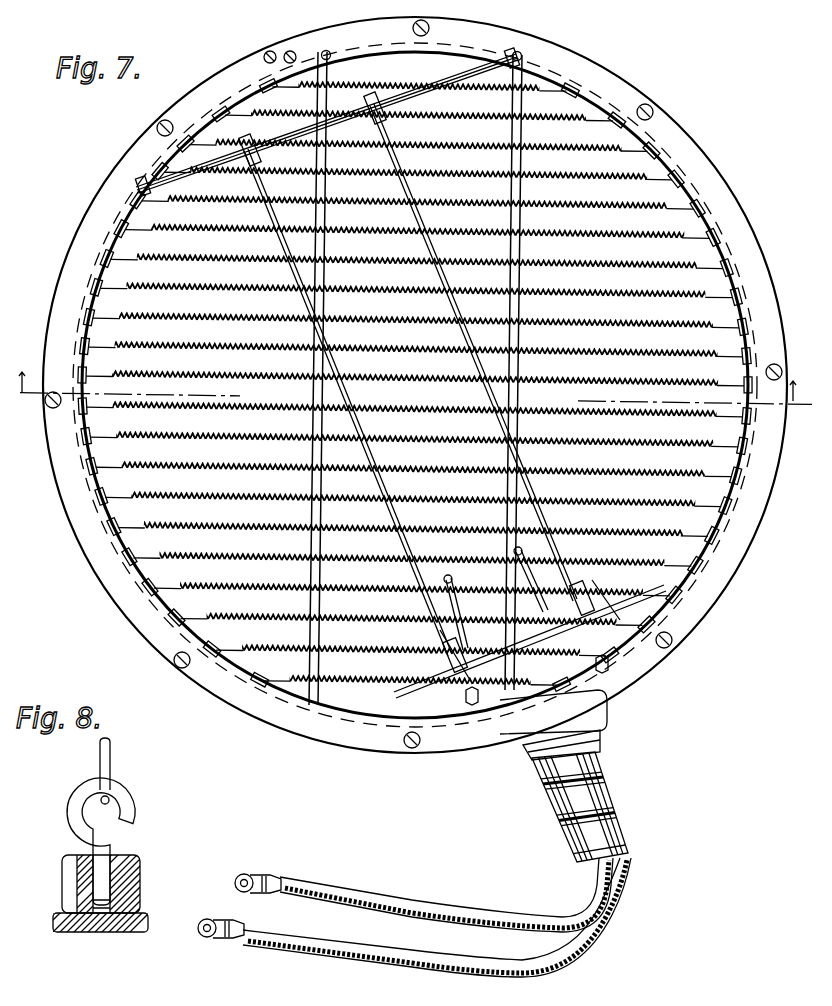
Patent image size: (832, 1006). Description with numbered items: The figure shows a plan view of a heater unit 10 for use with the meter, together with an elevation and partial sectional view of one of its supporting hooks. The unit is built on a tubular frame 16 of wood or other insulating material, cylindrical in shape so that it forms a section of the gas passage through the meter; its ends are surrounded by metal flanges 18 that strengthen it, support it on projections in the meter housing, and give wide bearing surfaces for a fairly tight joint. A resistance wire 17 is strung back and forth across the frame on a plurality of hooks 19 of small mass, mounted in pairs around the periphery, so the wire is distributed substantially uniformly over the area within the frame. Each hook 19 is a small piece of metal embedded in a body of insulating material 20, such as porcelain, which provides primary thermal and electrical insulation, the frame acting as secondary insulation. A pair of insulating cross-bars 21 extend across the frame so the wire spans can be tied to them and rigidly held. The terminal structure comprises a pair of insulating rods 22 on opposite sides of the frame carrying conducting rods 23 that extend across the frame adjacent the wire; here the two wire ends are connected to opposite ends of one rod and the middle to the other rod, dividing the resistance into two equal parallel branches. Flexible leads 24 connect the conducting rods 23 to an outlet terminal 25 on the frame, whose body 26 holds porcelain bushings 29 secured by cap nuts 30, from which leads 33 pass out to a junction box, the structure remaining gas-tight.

In FIG. 7, the section line 10 is at (414, 399).
In FIG. 7, the tubular frame 16 is at (83, 266).
In FIG. 7, the resistance wire 17 is at (660, 443).
In FIG. 8, the resistance wire 17 is at (110, 758).
In FIG. 7, the metal flanges 18 is at (100, 192).
In FIG. 7, the hooks 19 is at (752, 437).
In FIG. 8, the hooks 19 is at (77, 823).
In FIG. 7, the body of insulating material 20 is at (153, 613).
In FIG. 8, the body of insulating material 20 is at (125, 873).
In FIG. 7, the cross-bars 21 is at (521, 400).
In FIG. 7, the insulating rods 22 is at (440, 72).
In FIG. 7, the conducting rods 23 is at (383, 487).
In FIG. 7, the flexible leads 24 is at (539, 552).
In FIG. 7, the outlet terminal 25 is at (600, 773).
In FIG. 7, the body 26 is at (602, 713).
In FIG. 7, the porcelain bushings 29 is at (645, 625).
In FIG. 7, the cap nuts 30 is at (622, 664).
In FIG. 7, the leads 33 is at (442, 907).